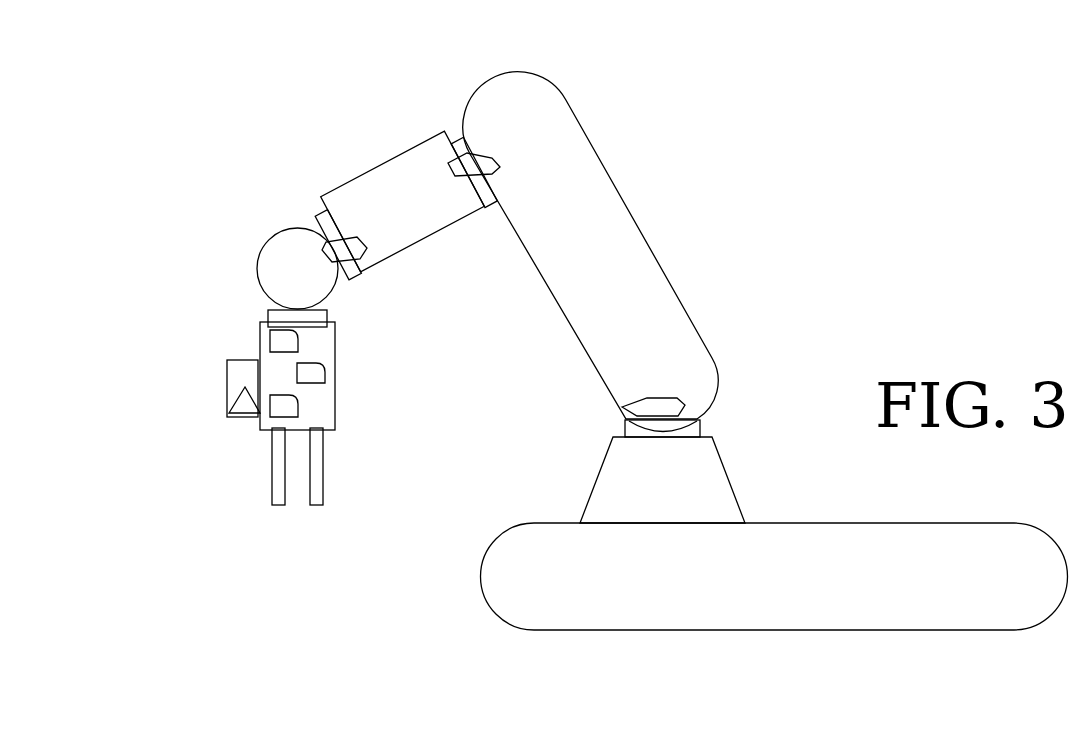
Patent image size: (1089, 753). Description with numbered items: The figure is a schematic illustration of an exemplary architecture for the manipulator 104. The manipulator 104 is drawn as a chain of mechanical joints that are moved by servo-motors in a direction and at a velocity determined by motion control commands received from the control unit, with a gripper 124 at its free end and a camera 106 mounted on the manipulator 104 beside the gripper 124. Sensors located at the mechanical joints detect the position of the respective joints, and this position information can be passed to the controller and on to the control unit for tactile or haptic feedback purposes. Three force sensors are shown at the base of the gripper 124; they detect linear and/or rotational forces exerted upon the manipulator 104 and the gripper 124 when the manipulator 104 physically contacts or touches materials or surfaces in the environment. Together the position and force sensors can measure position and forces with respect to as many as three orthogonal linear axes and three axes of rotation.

The manipulator 104 is at (850, 330).
The camera 106 is at (224, 377).
The gripper 124 is at (356, 477).